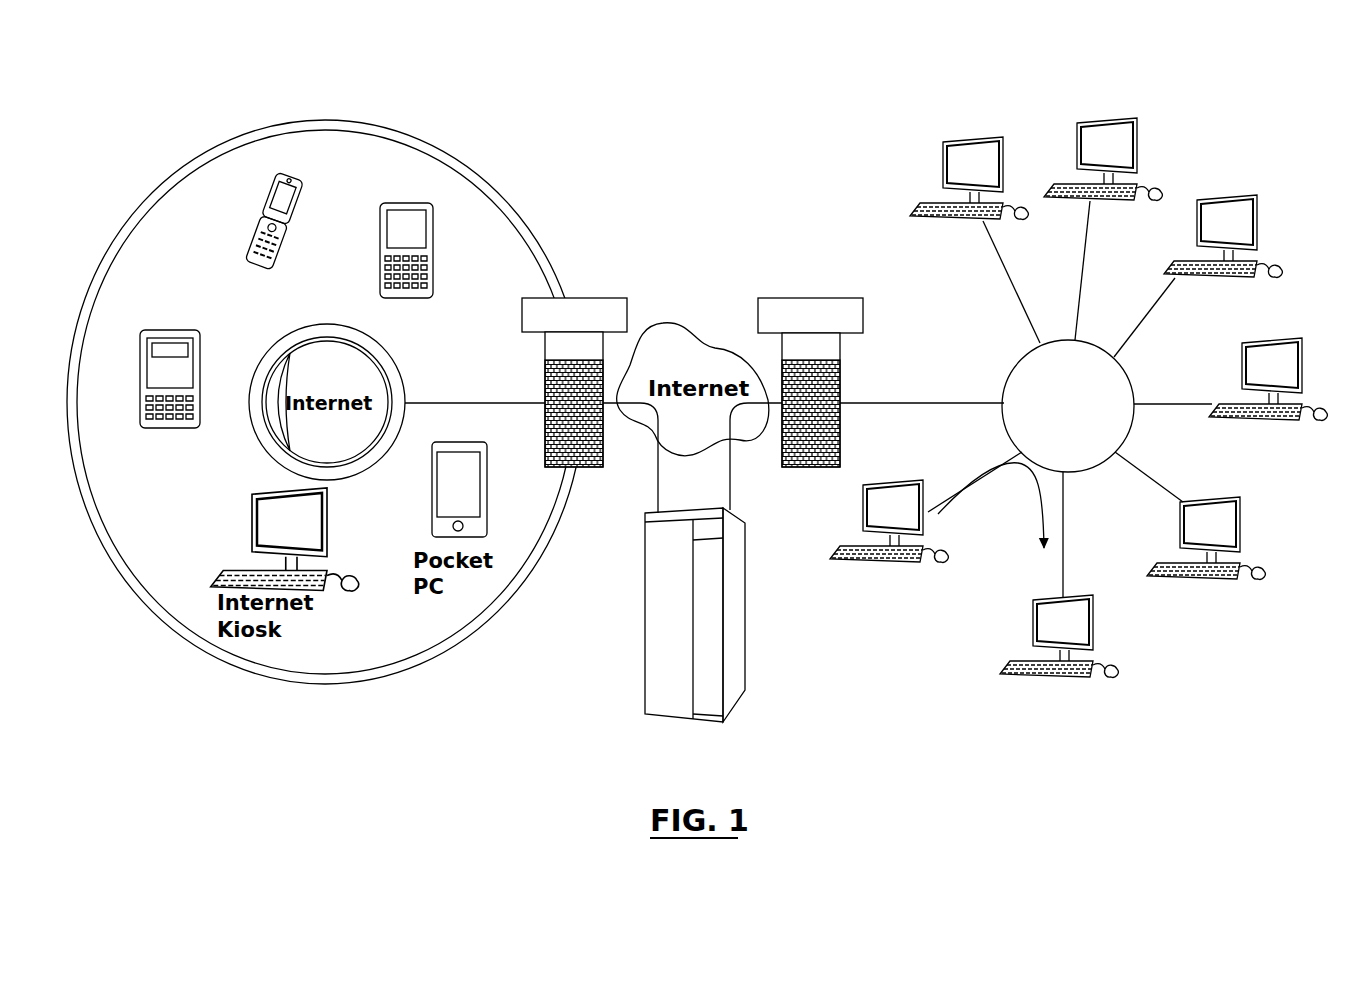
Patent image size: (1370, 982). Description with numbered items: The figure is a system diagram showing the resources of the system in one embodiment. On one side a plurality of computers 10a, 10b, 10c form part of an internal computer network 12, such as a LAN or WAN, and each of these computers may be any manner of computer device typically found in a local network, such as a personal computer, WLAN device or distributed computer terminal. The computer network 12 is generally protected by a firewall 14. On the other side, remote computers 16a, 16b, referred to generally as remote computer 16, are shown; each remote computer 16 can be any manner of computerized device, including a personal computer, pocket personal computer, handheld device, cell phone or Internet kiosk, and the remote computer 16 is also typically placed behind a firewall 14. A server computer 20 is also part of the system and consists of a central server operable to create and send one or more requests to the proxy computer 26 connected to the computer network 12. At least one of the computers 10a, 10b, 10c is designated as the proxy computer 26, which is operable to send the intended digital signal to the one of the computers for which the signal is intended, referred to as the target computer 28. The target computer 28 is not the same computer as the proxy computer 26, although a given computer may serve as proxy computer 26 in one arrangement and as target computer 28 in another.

The computer 10a is at (937, 165).
The computer 10b is at (1056, 153).
The computer 10c is at (1187, 216).
The internal computer network 12 is at (1309, 562).
The firewall 14 is at (588, 317).
The remote computer 16 is at (140, 377).
The remote computer 16a is at (430, 232).
The remote computer 16b is at (263, 210).
The server computer 20 is at (647, 717).
The proxy computer 26 is at (905, 577).
The target computer 28 is at (1054, 687).